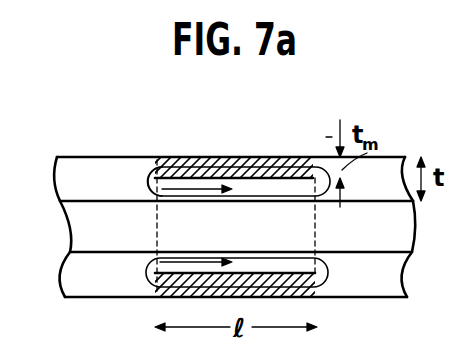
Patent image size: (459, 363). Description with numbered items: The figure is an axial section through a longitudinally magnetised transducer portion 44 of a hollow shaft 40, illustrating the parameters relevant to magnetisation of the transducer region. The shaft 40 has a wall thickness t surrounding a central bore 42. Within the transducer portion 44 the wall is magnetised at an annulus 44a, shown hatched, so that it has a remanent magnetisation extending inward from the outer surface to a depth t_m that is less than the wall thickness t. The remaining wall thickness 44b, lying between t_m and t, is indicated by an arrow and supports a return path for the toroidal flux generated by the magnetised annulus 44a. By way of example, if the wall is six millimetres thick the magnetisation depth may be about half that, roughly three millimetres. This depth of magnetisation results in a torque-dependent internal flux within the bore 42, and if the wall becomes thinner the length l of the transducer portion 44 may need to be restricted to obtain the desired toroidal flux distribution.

The shaft 40 is at (80, 173).
The bore 42 is at (377, 243).
The transducer portion 44 is at (224, 143).
The annulus 44a is at (305, 157).
The wall thickness 44b is at (158, 199).